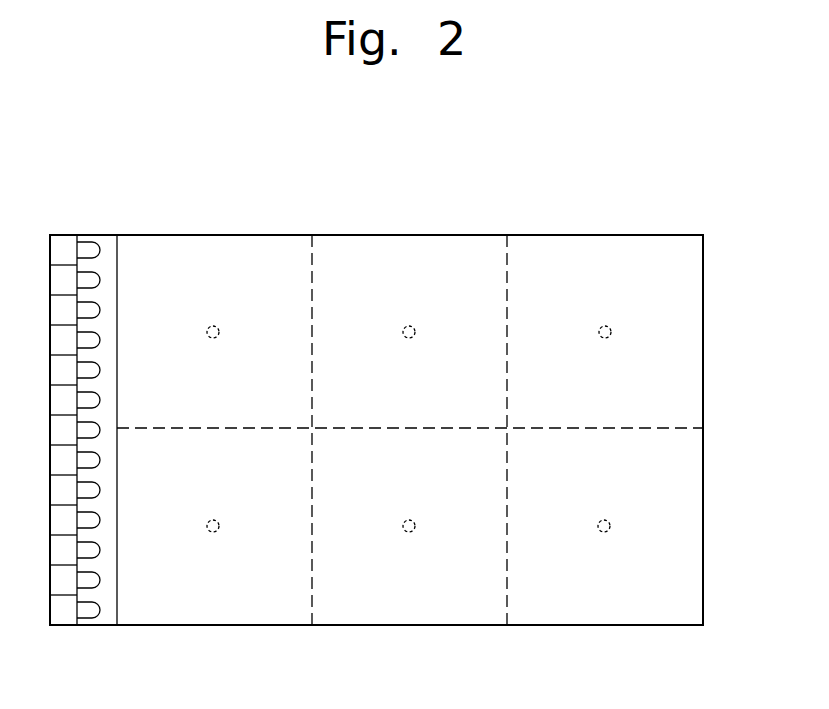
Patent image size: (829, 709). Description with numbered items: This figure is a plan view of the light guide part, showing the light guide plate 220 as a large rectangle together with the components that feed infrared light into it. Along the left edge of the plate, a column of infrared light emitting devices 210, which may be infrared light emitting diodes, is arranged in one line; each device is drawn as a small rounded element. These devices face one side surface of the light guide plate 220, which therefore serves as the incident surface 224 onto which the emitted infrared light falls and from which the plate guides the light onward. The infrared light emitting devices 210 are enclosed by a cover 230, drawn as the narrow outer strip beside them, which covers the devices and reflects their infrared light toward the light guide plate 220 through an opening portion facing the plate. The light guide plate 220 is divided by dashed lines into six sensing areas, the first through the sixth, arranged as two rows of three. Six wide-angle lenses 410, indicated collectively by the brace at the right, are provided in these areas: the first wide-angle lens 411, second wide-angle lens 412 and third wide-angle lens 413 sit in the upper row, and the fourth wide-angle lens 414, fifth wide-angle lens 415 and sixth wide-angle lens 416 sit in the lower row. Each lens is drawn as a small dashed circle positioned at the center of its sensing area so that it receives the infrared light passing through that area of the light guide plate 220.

The infrared light emitting device 210 is at (86, 247).
The cover 230 is at (103, 235).
The incident surface 224 is at (118, 260).
The light guide plate 220 is at (668, 235).
The wide-angle lenses 410 is at (718, 235).
The first wide-angle lens 411 is at (213, 326).
The second wide-angle lens 412 is at (409, 326).
The third wide-angle lens 413 is at (605, 326).
The fourth wide-angle lens 414 is at (213, 532).
The fifth wide-angle lens 415 is at (409, 532).
The sixth wide-angle lens 416 is at (604, 532).